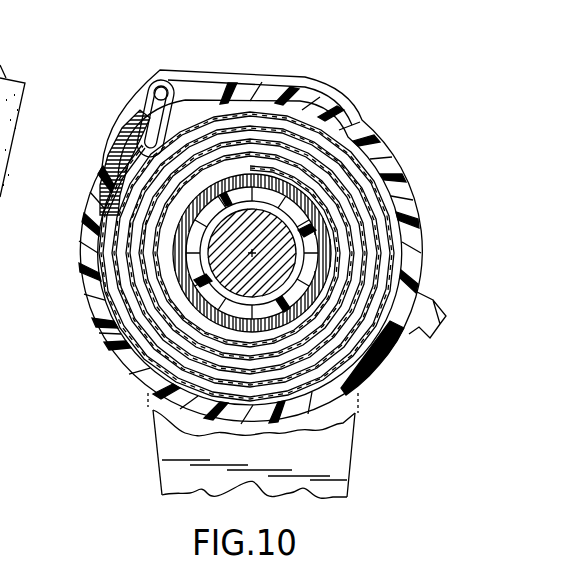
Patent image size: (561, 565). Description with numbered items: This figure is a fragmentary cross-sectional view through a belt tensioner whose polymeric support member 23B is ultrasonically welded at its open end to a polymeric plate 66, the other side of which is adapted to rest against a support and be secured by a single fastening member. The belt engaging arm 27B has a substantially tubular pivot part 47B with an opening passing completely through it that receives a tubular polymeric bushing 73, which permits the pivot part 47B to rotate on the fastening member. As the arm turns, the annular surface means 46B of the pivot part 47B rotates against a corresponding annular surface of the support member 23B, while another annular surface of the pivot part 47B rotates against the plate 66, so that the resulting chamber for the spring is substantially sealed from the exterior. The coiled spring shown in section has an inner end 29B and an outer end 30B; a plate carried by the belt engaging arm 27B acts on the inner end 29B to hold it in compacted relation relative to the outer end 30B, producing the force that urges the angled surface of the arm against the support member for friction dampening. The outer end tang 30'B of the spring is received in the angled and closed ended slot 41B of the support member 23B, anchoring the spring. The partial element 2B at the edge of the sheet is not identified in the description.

The component of a second embodiment 2B is at (11, 49).
The support member 23B is at (357, 130).
The belt engaging arm 27B is at (17, 202).
The inner end of the spring 29B is at (185, 262).
The outer end of the spring 30B is at (233, 110).
The outer end tang of the spring 30'B is at (131, 135).
The angled and closed ended slot 41B is at (163, 86).
The annular surface means 46B is at (320, 251).
The pivot part 47B is at (303, 221).
The polymeric plate 66 is at (137, 336).
The tubular polymeric bushing 73 is at (283, 214).